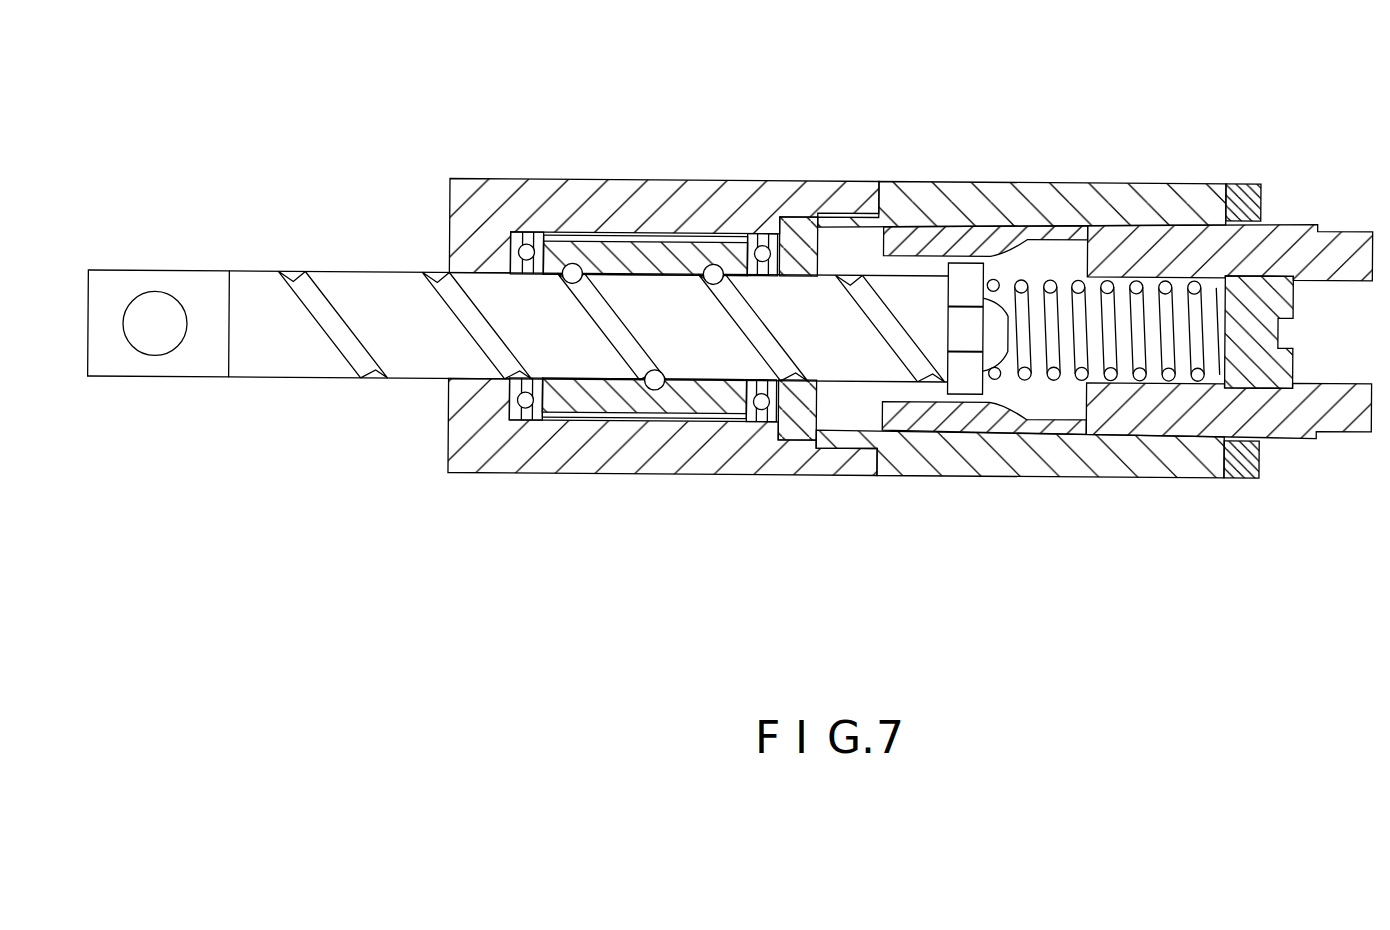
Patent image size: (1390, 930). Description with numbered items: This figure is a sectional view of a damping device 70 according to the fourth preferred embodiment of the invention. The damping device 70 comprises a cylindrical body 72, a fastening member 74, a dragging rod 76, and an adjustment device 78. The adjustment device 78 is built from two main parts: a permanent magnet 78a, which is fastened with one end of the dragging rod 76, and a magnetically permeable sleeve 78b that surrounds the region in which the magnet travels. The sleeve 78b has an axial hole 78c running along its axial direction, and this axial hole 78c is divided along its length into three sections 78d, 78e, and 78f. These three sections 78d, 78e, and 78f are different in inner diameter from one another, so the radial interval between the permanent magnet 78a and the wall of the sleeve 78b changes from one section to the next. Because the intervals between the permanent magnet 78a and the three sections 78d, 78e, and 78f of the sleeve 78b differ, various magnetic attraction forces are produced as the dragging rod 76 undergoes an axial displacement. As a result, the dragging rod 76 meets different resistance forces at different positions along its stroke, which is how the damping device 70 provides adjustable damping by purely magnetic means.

The damping device 70 is at (897, 118).
The cylindrical body 72 is at (905, 507).
The fastening member 74 is at (607, 400).
The dragging rod 76 is at (477, 285).
The adjustment device 78 is at (1225, 557).
The permanent magnet 78a is at (972, 382).
The magnetically permeable sleeve 78b is at (1185, 403).
The axial hole 78c is at (1062, 265).
The first section 78d is at (923, 255).
The second section 78e is at (997, 248).
The third section 78f is at (1062, 245).